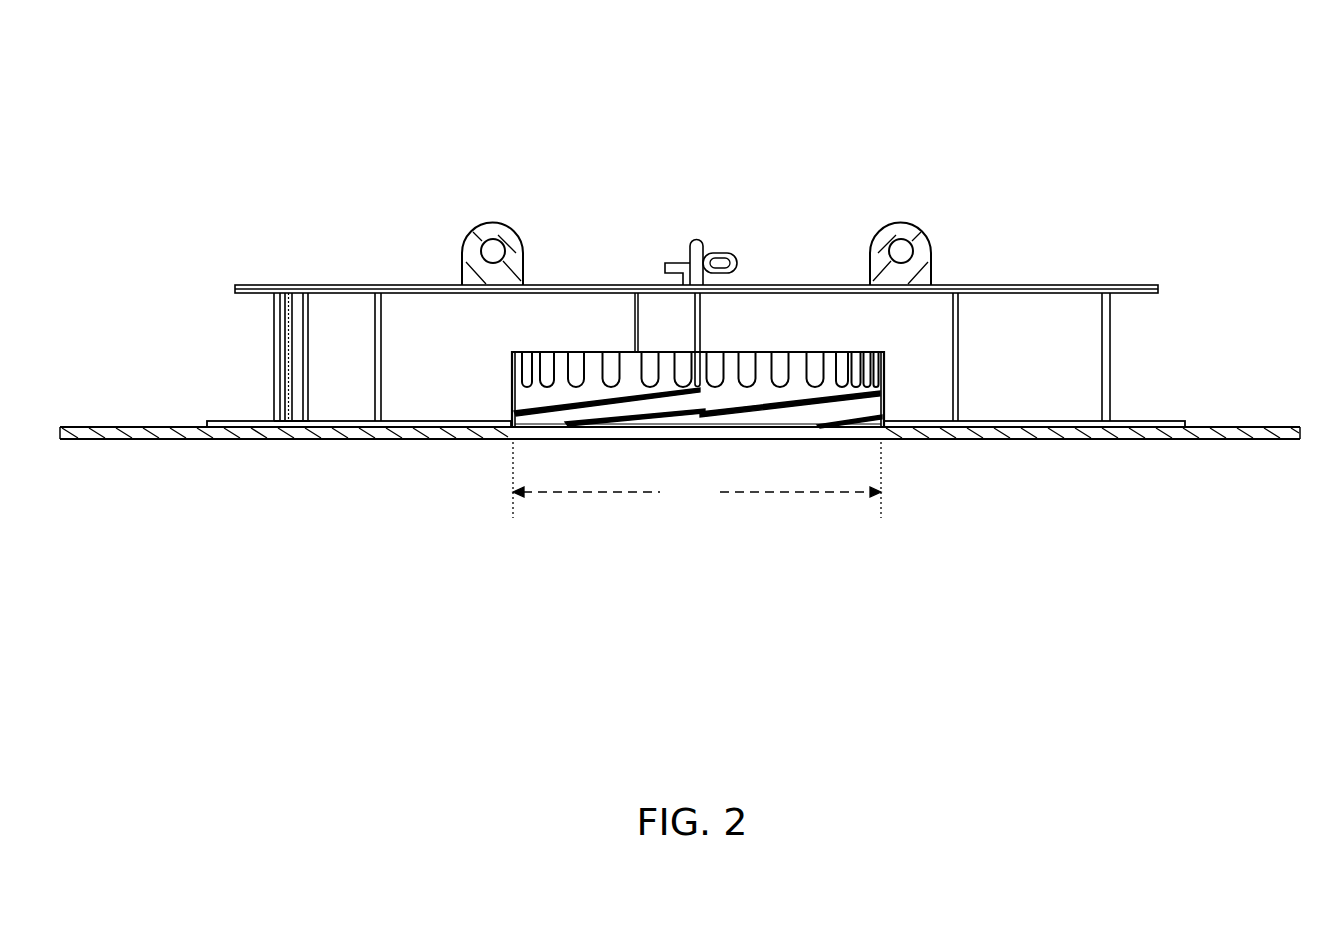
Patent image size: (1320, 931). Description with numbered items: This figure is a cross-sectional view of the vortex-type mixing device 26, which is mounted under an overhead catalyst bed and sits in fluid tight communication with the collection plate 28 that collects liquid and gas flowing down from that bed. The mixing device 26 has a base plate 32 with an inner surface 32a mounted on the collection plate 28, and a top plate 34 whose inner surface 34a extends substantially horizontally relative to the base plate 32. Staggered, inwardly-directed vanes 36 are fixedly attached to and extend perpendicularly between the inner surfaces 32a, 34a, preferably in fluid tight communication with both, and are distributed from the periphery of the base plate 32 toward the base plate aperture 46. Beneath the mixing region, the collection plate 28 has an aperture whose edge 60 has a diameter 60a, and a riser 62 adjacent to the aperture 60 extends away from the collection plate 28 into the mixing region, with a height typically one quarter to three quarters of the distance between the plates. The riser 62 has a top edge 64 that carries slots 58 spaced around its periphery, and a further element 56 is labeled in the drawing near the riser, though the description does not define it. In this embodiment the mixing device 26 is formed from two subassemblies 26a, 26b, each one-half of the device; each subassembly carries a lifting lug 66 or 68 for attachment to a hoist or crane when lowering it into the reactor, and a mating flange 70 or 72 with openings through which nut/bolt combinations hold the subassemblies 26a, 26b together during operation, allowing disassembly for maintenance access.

The mixing device 26 is at (150, 132).
The mixing device subassembly 26a is at (392, 284).
The mixing device subassembly 26b is at (1046, 284).
The collection plate 28 is at (218, 442).
The base plate 32 is at (306, 441).
The base plate inner surface 32a is at (244, 421).
The top plate 34 is at (318, 284).
The top plate inner surface 34a is at (251, 296).
The vanes 36 is at (516, 331).
The base plate aperture 46 is at (503, 417).
The second blade 56 is at (777, 440).
The slots 58 is at (583, 350).
The collection plate aperture 60 is at (871, 440).
The diameter 60a is at (697, 480).
The riser 62 is at (887, 378).
The top edge 64 is at (881, 351).
The lifting lug 66 is at (492, 222).
The lifting lug 68 is at (897, 222).
The mating flange 70 is at (692, 242).
The mating flange 72 is at (711, 252).